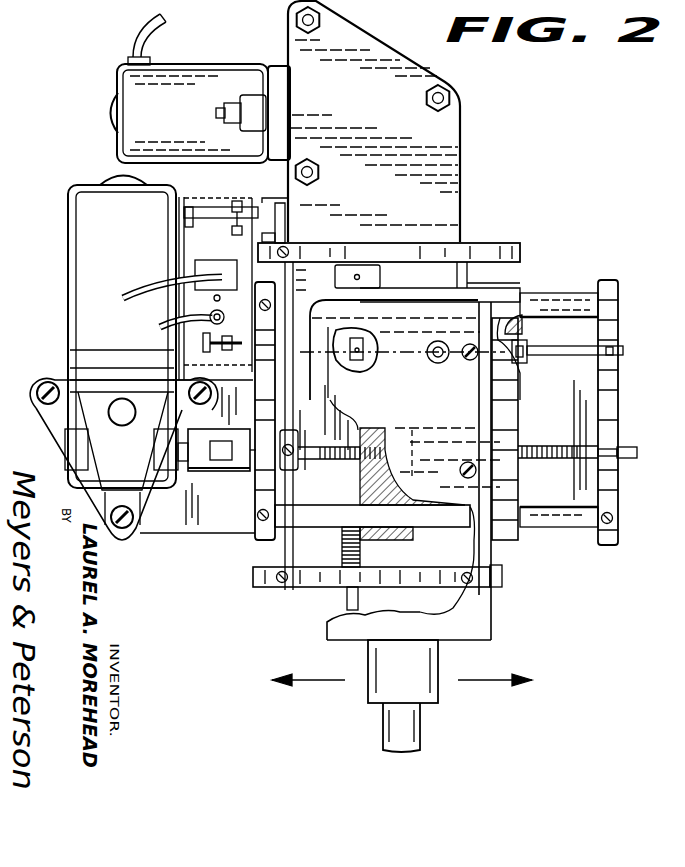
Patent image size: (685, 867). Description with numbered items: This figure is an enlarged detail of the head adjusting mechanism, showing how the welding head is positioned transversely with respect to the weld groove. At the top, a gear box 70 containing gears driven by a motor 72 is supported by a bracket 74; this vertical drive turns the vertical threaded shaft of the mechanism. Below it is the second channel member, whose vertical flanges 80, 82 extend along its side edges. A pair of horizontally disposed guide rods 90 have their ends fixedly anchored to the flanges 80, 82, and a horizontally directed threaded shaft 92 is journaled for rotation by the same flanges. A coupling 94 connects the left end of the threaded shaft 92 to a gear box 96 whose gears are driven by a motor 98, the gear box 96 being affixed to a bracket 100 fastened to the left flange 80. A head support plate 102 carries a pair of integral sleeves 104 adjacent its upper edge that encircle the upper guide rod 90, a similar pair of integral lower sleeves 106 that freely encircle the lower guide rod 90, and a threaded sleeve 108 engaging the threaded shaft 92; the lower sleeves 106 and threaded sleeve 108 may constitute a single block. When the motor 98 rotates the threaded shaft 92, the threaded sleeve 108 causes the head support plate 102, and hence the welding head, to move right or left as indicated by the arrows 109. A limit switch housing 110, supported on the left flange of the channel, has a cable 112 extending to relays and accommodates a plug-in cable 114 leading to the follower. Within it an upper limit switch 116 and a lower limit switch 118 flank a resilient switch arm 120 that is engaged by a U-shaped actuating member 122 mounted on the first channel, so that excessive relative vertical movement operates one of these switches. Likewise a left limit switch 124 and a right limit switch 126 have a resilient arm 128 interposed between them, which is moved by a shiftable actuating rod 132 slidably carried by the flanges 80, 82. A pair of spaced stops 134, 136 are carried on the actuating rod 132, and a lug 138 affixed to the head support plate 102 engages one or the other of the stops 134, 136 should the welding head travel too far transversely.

The gear box 70 is at (278, 66).
The motor 72 is at (182, 82).
The bracket 74 is at (448, 148).
The vertical flange 80 is at (250, 505).
The vertical flange 82 is at (613, 433).
The horizontal guide rods 90 is at (567, 307).
The threaded shaft 92 is at (533, 462).
The coupling 94 is at (208, 478).
The gear box 96 is at (78, 413).
The motor 98 is at (68, 252).
The bracket 100 is at (170, 520).
The head support plate 102 is at (483, 430).
The integral sleeves 104 is at (415, 285).
The integral lower sleeves 106 is at (387, 543).
The threaded sleeve 108 is at (360, 372).
The arrows 109 is at (320, 683).
The limit switch housing 110 is at (192, 298).
The cable 112 is at (160, 324).
The plug-in cable 114 is at (140, 290).
The upper limit switch 116 is at (218, 200).
The lower limit switch 118 is at (228, 232).
The resilient switch arm 120 is at (260, 214).
The U-shaped actuating member 122 is at (272, 200).
The left limit switch 124 is at (178, 348).
The right limit switch 126 is at (292, 292).
The resilient arm 128 is at (180, 366).
The shiftable actuating rod 132 is at (585, 358).
The stop 134 is at (385, 368).
The stop 136 is at (522, 363).
The lug 138 is at (440, 363).